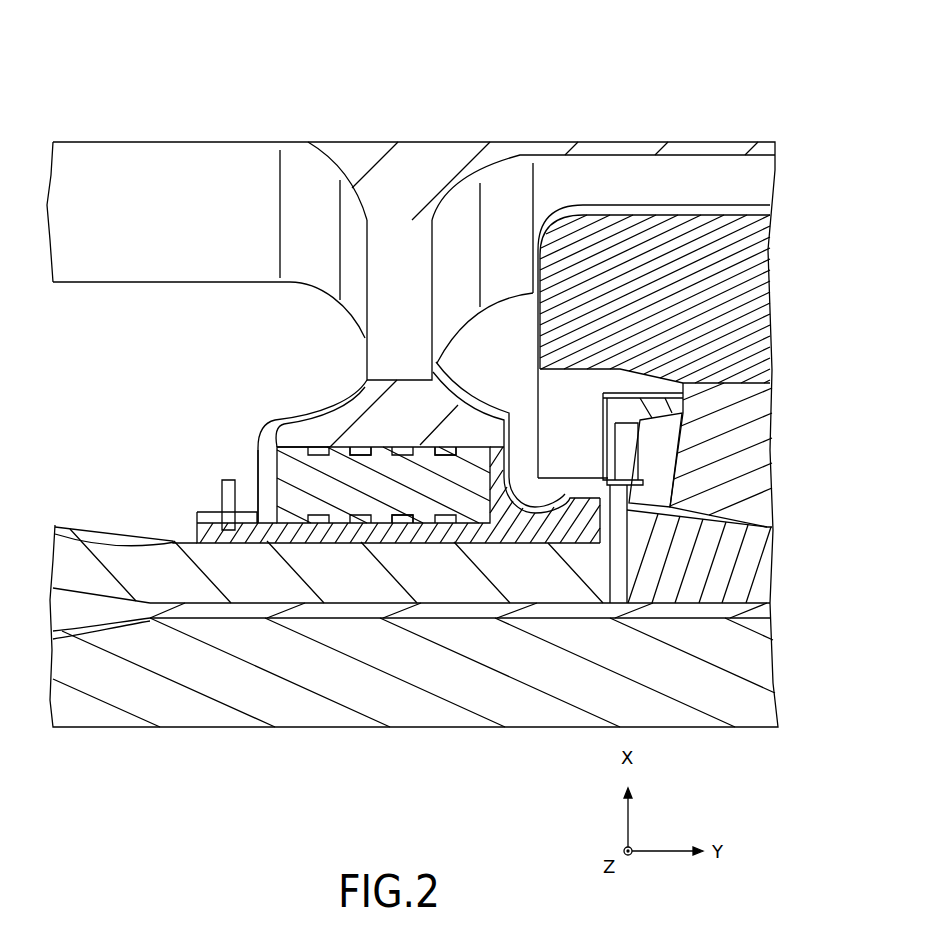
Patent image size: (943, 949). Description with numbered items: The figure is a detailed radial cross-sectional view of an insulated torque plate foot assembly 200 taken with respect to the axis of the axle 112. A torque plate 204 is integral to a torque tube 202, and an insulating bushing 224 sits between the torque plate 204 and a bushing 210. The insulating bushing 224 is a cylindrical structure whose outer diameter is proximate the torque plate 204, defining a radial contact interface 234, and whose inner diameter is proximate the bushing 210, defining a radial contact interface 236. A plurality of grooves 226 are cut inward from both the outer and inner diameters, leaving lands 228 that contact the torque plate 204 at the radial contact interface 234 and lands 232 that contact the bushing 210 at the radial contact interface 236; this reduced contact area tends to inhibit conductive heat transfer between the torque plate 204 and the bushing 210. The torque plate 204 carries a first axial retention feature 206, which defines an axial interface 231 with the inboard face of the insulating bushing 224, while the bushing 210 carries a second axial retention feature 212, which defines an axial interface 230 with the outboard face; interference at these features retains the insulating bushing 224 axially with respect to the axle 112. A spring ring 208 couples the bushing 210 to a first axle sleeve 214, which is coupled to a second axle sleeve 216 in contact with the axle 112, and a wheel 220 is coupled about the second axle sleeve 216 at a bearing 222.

The insulated torque plate foot assembly 200 is at (699, 108).
The torque tube 202 is at (190, 231).
The torque plate 204 is at (383, 338).
The first axial retention feature 206 is at (263, 433).
The spring ring 208 is at (222, 485).
The bushing 210 is at (197, 537).
The second axial retention feature 212 is at (510, 450).
The first axle sleeve 214 is at (173, 545).
The second axle sleeve 216 is at (446, 606).
The wheel 220 is at (675, 301).
The bearing 222 is at (757, 462).
The insulating bushing 224 is at (388, 501).
The grooves 226 is at (292, 448).
The lands 228 is at (445, 458).
The axial interface 230 is at (512, 485).
The axial interface 231 is at (283, 480).
The lands 232 is at (425, 516).
The radial contact interface 234 is at (365, 446).
The radial contact interface 236 is at (380, 525).
The axle 112 is at (265, 690).